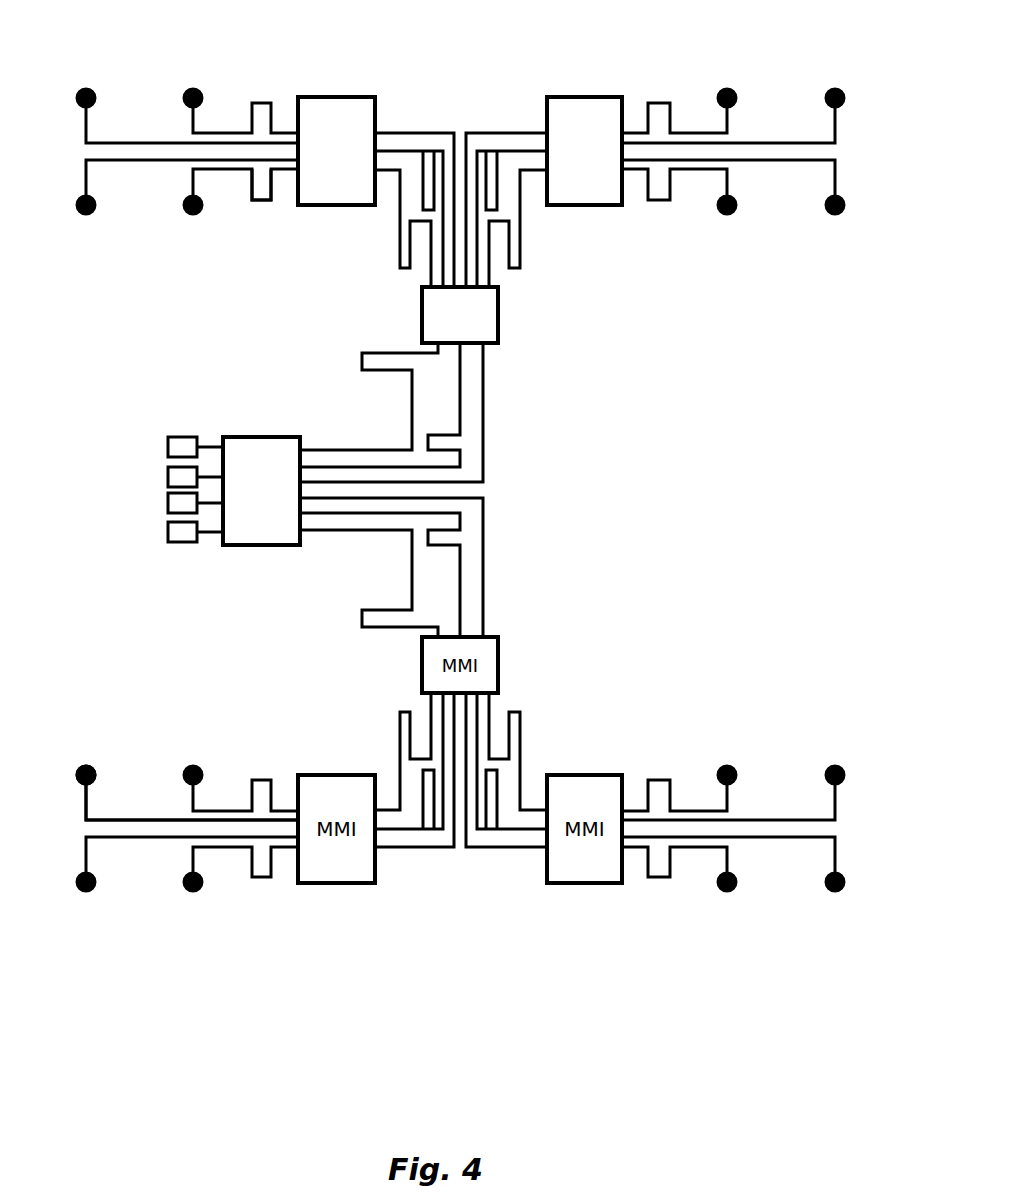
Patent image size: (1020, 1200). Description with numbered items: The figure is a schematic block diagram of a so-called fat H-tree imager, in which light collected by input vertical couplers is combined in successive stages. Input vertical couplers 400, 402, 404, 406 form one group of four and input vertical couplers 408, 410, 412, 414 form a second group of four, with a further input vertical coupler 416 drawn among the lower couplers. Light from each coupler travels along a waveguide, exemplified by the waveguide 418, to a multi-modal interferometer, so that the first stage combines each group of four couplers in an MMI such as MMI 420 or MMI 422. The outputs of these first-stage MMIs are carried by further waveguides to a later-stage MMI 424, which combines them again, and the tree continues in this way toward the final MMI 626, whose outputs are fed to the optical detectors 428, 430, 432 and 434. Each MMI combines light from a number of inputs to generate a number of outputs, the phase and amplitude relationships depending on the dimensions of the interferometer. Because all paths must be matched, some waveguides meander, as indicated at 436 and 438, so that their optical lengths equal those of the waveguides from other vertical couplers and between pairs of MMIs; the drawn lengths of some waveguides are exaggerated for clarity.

The input vertical coupler 400 is at (86, 89).
The input vertical coupler 402 is at (193, 89).
The input vertical coupler 404 is at (86, 214).
The input vertical coupler 406 is at (193, 214).
The input vertical coupler 408 is at (727, 89).
The input vertical coupler 410 is at (835, 89).
The input vertical coupler 412 is at (727, 214).
The input vertical coupler 414 is at (835, 214).
The input vertical coupler 416 is at (86, 766).
The waveguide 418 is at (290, 172).
The multi-modal interferometer (MMI) 420 is at (355, 97).
The multi-modal interferometer (MMI) 422 is at (567, 97).
The multi-modal interferometer (MMI) 424 is at (498, 308).
The optical detector 428 is at (168, 446).
The optical detector 430 is at (168, 477).
The optical detector 432 is at (168, 503).
The optical detector 434 is at (168, 532).
The meander 436 is at (260, 202).
The meander 438 is at (400, 250).
The multimode interference coupler 626 is at (262, 547).